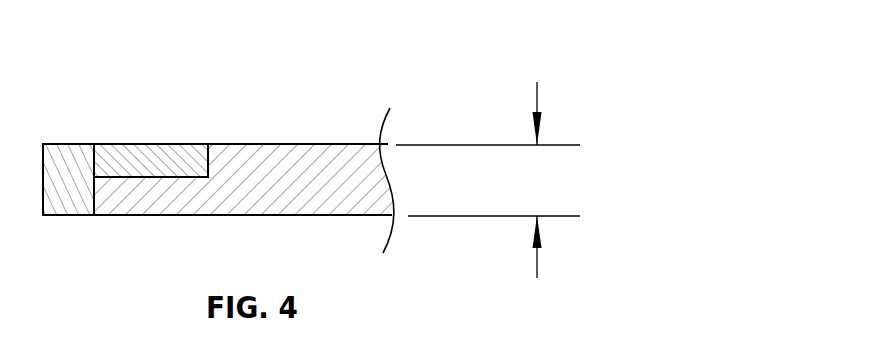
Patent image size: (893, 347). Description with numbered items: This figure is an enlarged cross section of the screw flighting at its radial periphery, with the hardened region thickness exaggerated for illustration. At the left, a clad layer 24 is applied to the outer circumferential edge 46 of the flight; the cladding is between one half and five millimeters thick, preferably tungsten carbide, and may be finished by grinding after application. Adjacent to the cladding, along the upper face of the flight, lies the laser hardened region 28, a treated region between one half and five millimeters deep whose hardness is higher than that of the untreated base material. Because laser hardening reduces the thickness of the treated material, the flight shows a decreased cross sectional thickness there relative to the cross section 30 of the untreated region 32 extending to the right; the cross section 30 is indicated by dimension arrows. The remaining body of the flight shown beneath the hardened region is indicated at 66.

The clad layer 24 is at (68, 178).
The laser hardened region 28 is at (152, 165).
The cross section 30 is at (537, 87).
The untreated region 32 is at (262, 155).
The outer circumferential edge 46 is at (94, 215).
The core portion 66 is at (155, 192).